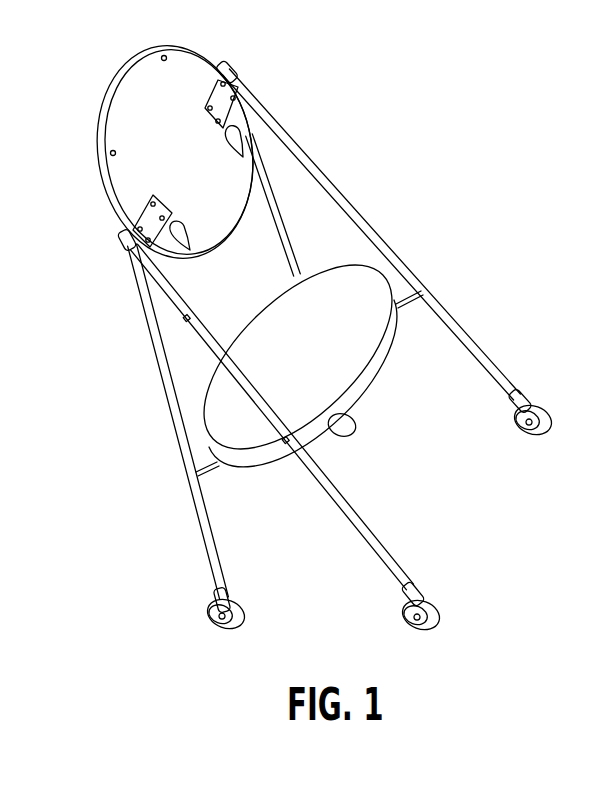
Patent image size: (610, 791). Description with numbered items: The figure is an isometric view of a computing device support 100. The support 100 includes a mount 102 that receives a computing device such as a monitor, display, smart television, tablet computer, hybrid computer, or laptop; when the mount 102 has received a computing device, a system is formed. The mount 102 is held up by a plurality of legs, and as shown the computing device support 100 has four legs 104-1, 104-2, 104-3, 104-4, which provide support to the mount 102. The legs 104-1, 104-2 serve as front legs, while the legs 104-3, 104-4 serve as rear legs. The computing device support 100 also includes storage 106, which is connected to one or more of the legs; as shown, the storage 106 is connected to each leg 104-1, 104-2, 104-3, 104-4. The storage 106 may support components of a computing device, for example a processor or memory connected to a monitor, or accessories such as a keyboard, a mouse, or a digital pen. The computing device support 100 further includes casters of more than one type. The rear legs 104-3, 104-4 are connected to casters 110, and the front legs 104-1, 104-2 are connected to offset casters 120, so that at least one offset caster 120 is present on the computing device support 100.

The computing device support 100 is at (392, 90).
The mount 102 is at (210, 178).
The leg 104-1 is at (343, 500).
The leg 104-2 is at (346, 195).
The leg 104-3 is at (213, 538).
The leg 104-4 is at (313, 237).
The storage 106 is at (318, 368).
The caster 110 is at (178, 594).
The offset caster 120 is at (553, 385).